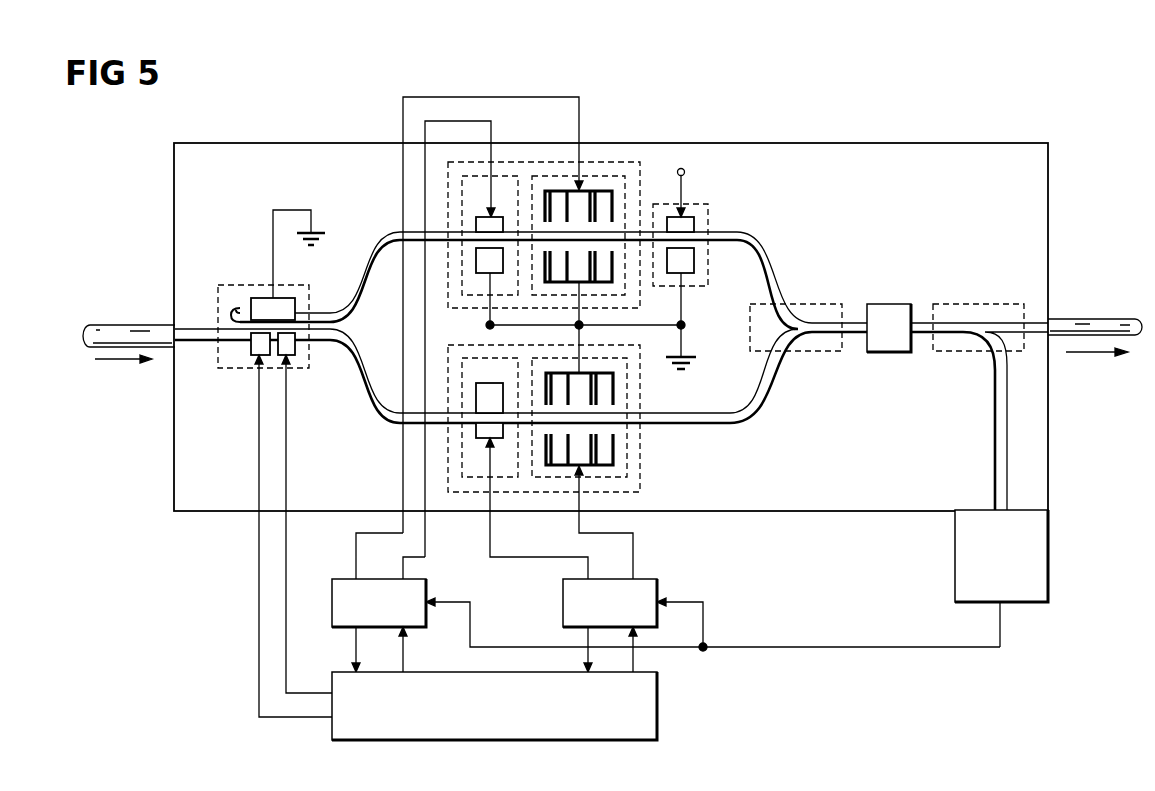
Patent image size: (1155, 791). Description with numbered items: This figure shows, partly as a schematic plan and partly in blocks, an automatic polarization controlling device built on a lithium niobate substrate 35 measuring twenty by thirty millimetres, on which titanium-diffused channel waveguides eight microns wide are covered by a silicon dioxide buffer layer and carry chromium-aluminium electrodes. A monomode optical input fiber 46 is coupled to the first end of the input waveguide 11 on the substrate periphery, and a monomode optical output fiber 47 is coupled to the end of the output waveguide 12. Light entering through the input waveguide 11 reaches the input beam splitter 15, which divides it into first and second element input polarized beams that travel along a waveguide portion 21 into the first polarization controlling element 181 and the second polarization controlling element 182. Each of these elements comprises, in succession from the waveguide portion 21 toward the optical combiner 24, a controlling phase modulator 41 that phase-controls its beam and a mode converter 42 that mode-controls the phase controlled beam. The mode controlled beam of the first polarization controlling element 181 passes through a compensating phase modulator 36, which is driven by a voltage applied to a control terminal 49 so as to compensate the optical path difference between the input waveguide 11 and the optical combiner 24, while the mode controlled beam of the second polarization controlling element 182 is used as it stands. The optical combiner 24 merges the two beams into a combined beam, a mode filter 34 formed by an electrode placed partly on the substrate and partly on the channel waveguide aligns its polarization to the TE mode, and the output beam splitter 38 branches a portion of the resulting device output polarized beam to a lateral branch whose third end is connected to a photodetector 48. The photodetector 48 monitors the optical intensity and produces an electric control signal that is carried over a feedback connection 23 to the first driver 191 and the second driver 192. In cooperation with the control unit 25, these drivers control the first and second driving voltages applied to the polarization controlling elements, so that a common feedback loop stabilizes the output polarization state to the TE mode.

The input waveguide 11 is at (191, 328).
The output waveguide 12 is at (850, 323).
The input beam splitter 15 is at (228, 285).
The waveguide portion 21 is at (362, 284).
The feedback connection 23 is at (812, 647).
The optical combiner 24 is at (808, 352).
The control unit 25 is at (659, 712).
The mode filter 34 is at (873, 352).
The lithium niobate substrate 35 is at (995, 143).
The compensating phase modulator 36 is at (708, 262).
The output beam splitter 38 is at (948, 304).
The controlling phase modulator 41 is at (467, 296).
The mode converter 42 is at (640, 292).
The optical input fiber 46 is at (104, 325).
The optical output fiber 47 is at (1102, 320).
The photodetector 48 is at (955, 575).
The control terminal 49 is at (685, 173).
The first polarization controlling element 181 is at (640, 172).
The second polarization controlling element 182 is at (640, 478).
The first driver 191 is at (332, 579).
The second driver 192 is at (651, 579).